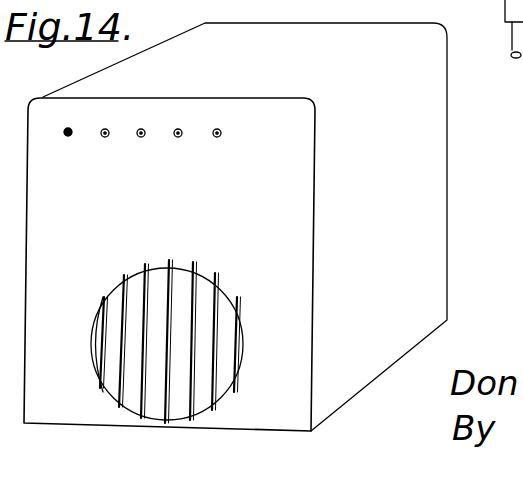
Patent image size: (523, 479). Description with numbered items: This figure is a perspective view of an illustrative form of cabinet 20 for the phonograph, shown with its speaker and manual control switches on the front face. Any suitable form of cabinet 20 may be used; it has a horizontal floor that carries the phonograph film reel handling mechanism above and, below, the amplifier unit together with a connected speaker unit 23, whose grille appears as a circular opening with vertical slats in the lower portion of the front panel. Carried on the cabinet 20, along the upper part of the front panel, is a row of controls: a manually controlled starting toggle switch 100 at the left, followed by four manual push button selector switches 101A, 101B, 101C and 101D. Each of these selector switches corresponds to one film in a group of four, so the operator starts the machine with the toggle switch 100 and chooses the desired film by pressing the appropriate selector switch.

The cabinet 20 is at (433, 132).
The speaker unit 23 is at (202, 339).
The starting toggle switch 100 is at (71, 136).
The manual push button selector switch 101A is at (105, 137).
The manual push button selector switch 101B is at (141, 137).
The manual push button selector switch 101C is at (180, 137).
The manual push button selector switch 101D is at (218, 137).